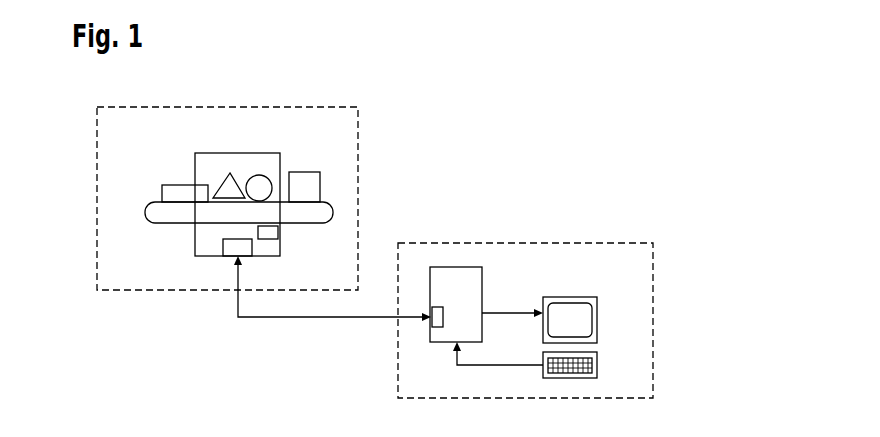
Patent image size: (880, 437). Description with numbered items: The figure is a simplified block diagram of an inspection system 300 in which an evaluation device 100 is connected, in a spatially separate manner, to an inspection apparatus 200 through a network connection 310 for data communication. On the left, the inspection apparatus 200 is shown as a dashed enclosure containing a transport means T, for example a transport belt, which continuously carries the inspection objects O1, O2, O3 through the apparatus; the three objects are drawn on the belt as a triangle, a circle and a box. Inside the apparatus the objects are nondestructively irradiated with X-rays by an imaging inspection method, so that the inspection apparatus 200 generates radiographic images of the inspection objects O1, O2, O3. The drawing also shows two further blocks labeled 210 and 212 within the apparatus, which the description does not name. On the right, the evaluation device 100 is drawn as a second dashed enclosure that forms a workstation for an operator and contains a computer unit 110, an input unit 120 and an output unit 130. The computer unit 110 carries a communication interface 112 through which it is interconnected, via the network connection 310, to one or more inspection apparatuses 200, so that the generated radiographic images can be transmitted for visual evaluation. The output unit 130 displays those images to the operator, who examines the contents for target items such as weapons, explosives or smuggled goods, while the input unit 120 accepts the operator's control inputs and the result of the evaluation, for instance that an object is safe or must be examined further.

The evaluation device 100 is at (633, 258).
The computer unit 110 is at (468, 278).
The communication interface 112 is at (437, 308).
The input unit 120 is at (597, 363).
The output unit 130 is at (582, 320).
The inspection apparatus 200 is at (162, 123).
The sensor unit 210 is at (272, 237).
The control unit 212 is at (233, 243).
The inspection system 300 is at (541, 170).
The network connection 310 is at (320, 320).
The transport means T is at (145, 212).
The inspection object O1 is at (216, 177).
The inspection object O2 is at (259, 178).
The inspection object O3 is at (306, 178).